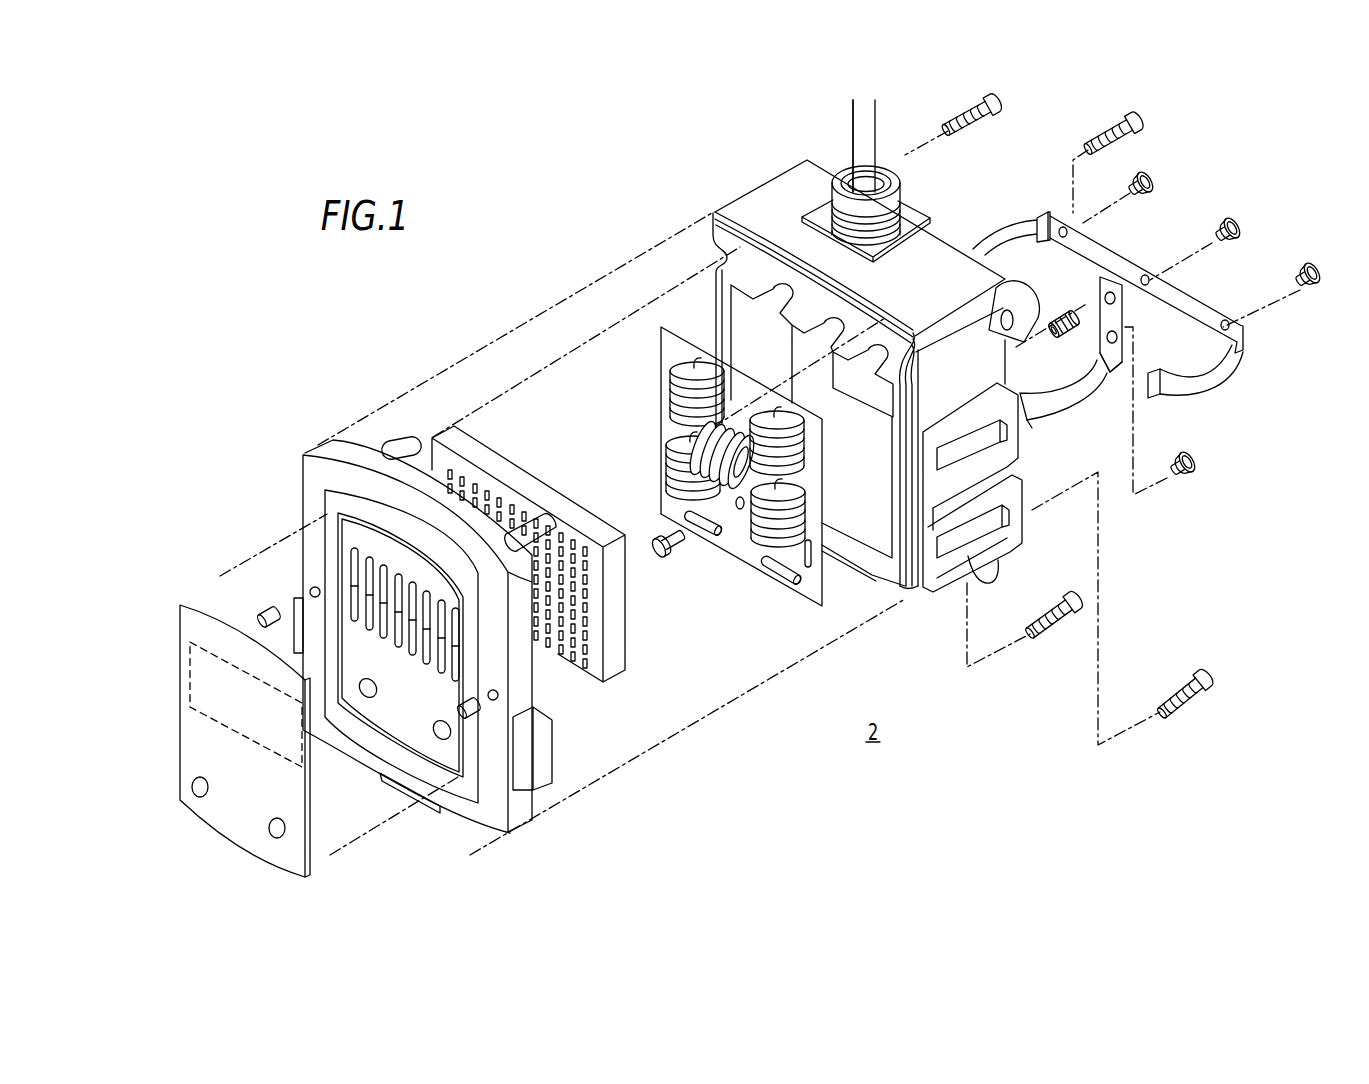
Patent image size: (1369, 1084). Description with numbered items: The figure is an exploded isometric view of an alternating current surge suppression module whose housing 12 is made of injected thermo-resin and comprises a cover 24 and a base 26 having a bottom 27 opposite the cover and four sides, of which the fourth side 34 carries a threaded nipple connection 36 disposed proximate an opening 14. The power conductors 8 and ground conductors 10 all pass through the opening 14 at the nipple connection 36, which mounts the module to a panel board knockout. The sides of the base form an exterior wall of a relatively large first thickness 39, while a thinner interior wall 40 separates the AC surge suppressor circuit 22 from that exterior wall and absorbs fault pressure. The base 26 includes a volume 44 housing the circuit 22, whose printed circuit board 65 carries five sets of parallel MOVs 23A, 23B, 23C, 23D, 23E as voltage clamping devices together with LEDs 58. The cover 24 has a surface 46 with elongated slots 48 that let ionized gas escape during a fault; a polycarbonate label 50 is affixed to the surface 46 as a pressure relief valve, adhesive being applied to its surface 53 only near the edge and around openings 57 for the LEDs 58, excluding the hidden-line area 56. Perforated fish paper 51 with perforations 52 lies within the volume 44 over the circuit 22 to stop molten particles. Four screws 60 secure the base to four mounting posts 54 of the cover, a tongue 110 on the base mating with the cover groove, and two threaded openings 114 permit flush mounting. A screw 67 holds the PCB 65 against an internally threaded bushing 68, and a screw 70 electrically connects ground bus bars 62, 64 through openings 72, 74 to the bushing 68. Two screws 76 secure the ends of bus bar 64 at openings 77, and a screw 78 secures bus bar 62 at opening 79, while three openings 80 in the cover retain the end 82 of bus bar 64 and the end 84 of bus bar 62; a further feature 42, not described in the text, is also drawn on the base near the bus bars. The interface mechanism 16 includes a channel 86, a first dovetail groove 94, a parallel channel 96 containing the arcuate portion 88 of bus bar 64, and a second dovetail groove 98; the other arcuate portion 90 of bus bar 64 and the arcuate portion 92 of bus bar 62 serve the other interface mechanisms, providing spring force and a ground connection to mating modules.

The power conductors 8 is at (857, 146).
The ground conductors 10 is at (852, 130).
The housing 12 is at (776, 462).
The opening 14 is at (865, 210).
The interface mechanism 16 is at (999, 501).
The AC surge suppressor circuit 22 is at (728, 481).
The MOVs (L1-G) 23A is at (672, 481).
The MOVs (L2-G) 23B is at (803, 492).
The MOVs (L1-N) 23C is at (675, 371).
The MOVs (L2-N) 23D is at (802, 420).
The MOVs (N-G) 23E is at (735, 440).
The cover 24 is at (410, 608).
The base 26 is at (950, 246).
The bottom 27 is at (860, 399).
The fourth side 34 is at (754, 200).
The nipple connection 36 is at (835, 188).
The first thickness 39 is at (898, 452).
The interior wall 40 is at (731, 320).
The mounting lug 42 is at (994, 311).
The volume 44 is at (875, 530).
The surface 46 is at (345, 533).
The slots 48 is at (418, 657).
The label 50 is at (249, 720).
The fish paper 51 is at (559, 554).
The perforations 52 is at (587, 607).
The label surface 53 is at (312, 786).
The mounting posts 54 is at (398, 440).
The area 56 is at (272, 740).
The openings 57 is at (434, 730).
The LEDs 58 is at (757, 550).
The screws 60 is at (1090, 132).
The ground bus bar 62 is at (1106, 392).
The ground bus bar 64 is at (1169, 297).
The printed circuit board 65 is at (805, 597).
The screw 67 is at (676, 553).
The bushing 68 is at (1060, 313).
The screw 70 is at (1232, 216).
The opening 72 is at (1086, 371).
The opening 74 is at (1146, 274).
The screws 76 is at (1155, 180).
The openings 77 is at (1069, 233).
The screw 78 is at (1196, 460).
The opening 79 is at (1117, 335).
The openings 80 is at (298, 640).
The end 82 is at (1158, 399).
The end 84 is at (1032, 432).
The channel 86 is at (921, 540).
The arcuate portion 88 is at (1195, 393).
The arcuate portion 90 is at (1009, 221).
The arcuate portion 92 is at (1071, 415).
The first dovetail groove 94 is at (965, 438).
The channel 96 is at (1000, 494).
The second dovetail groove 98 is at (950, 562).
The tongue 110 is at (712, 300).
The threaded openings 114 is at (263, 613).